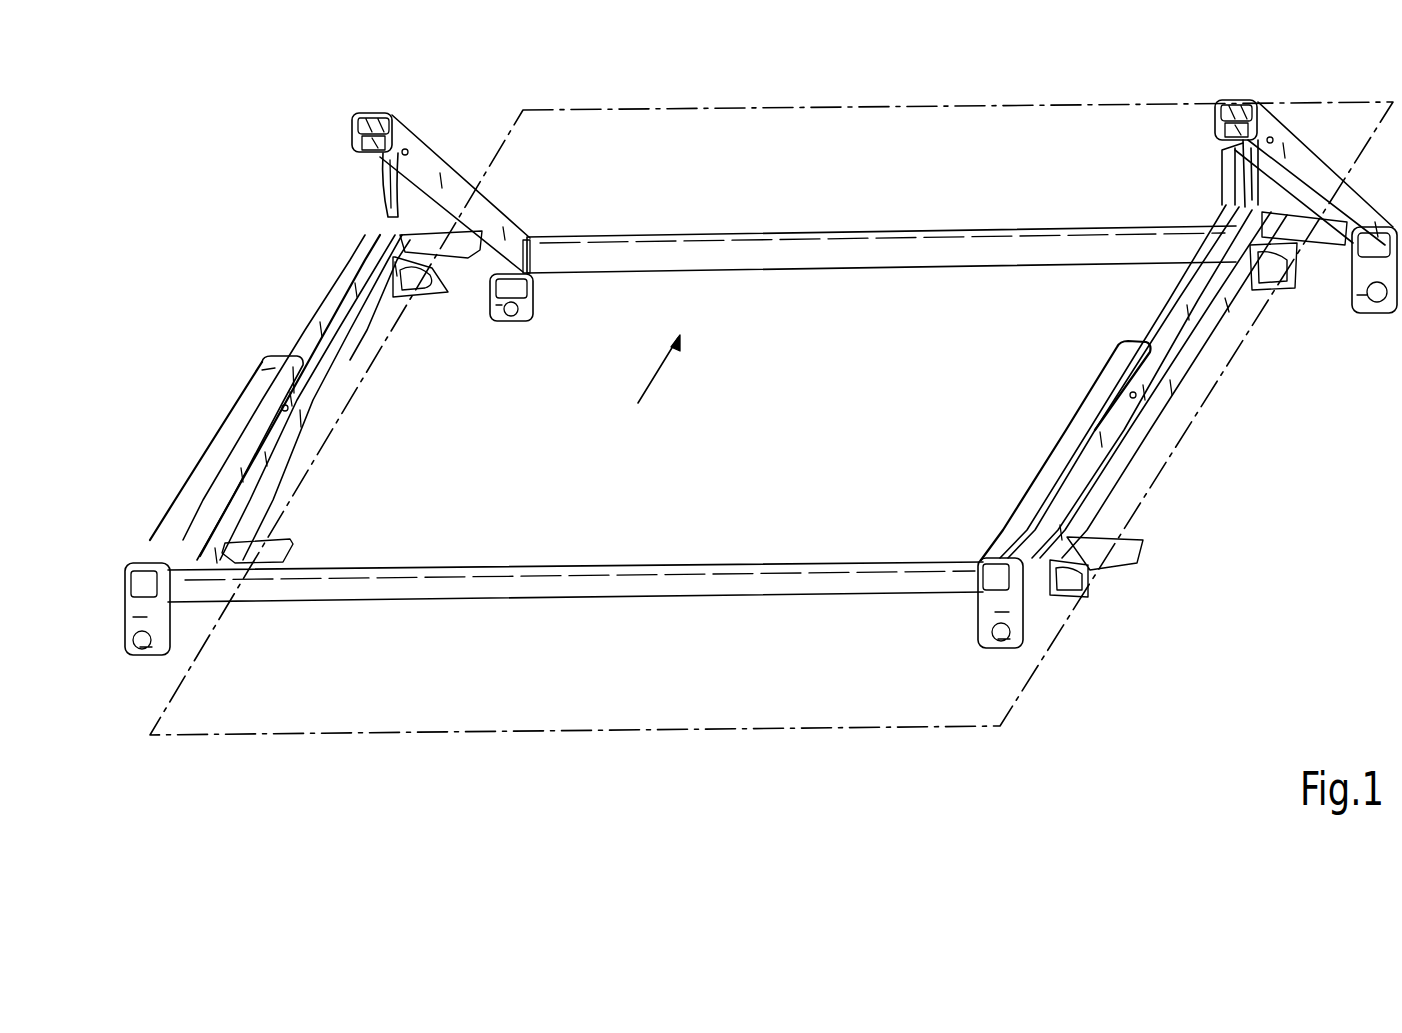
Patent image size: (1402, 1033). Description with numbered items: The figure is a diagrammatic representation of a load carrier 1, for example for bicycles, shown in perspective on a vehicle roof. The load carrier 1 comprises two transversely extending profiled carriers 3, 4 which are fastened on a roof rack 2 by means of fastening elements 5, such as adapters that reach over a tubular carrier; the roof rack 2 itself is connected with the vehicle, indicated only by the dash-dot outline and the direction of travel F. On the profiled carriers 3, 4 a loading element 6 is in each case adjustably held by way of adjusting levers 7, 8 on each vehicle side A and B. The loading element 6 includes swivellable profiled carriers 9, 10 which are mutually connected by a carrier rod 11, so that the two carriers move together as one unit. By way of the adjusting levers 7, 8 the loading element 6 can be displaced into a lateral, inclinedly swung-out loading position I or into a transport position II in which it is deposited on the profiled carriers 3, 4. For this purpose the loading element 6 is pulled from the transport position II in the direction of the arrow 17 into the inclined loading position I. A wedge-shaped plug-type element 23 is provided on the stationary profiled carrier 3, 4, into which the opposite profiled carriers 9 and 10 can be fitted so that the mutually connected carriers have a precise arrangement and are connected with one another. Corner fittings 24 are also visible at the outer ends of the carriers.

The load carrier 1 is at (912, 296).
The roof rack 2 is at (720, 732).
The profiled carrier 3 is at (1190, 355).
The profiled carrier 4 is at (346, 306).
The fastening element 5 is at (463, 258).
The loading element 6 is at (990, 232).
The adjusting lever 7 is at (385, 197).
The adjusting lever 8 is at (1245, 178).
The swivellable profiled carrier 9 is at (424, 155).
The swivellable profiled carrier 10 is at (1310, 173).
The carrier rod 11 is at (866, 258).
The arrow 17 is at (660, 372).
The plug-type element 23 is at (303, 366).
The corner fitting 24 is at (360, 132).
The vehicle side A is at (601, 785).
The vehicle side B is at (936, 97).
The direction of travel F is at (187, 428).
The loading position I is at (468, 154).
The transport position II is at (173, 477).